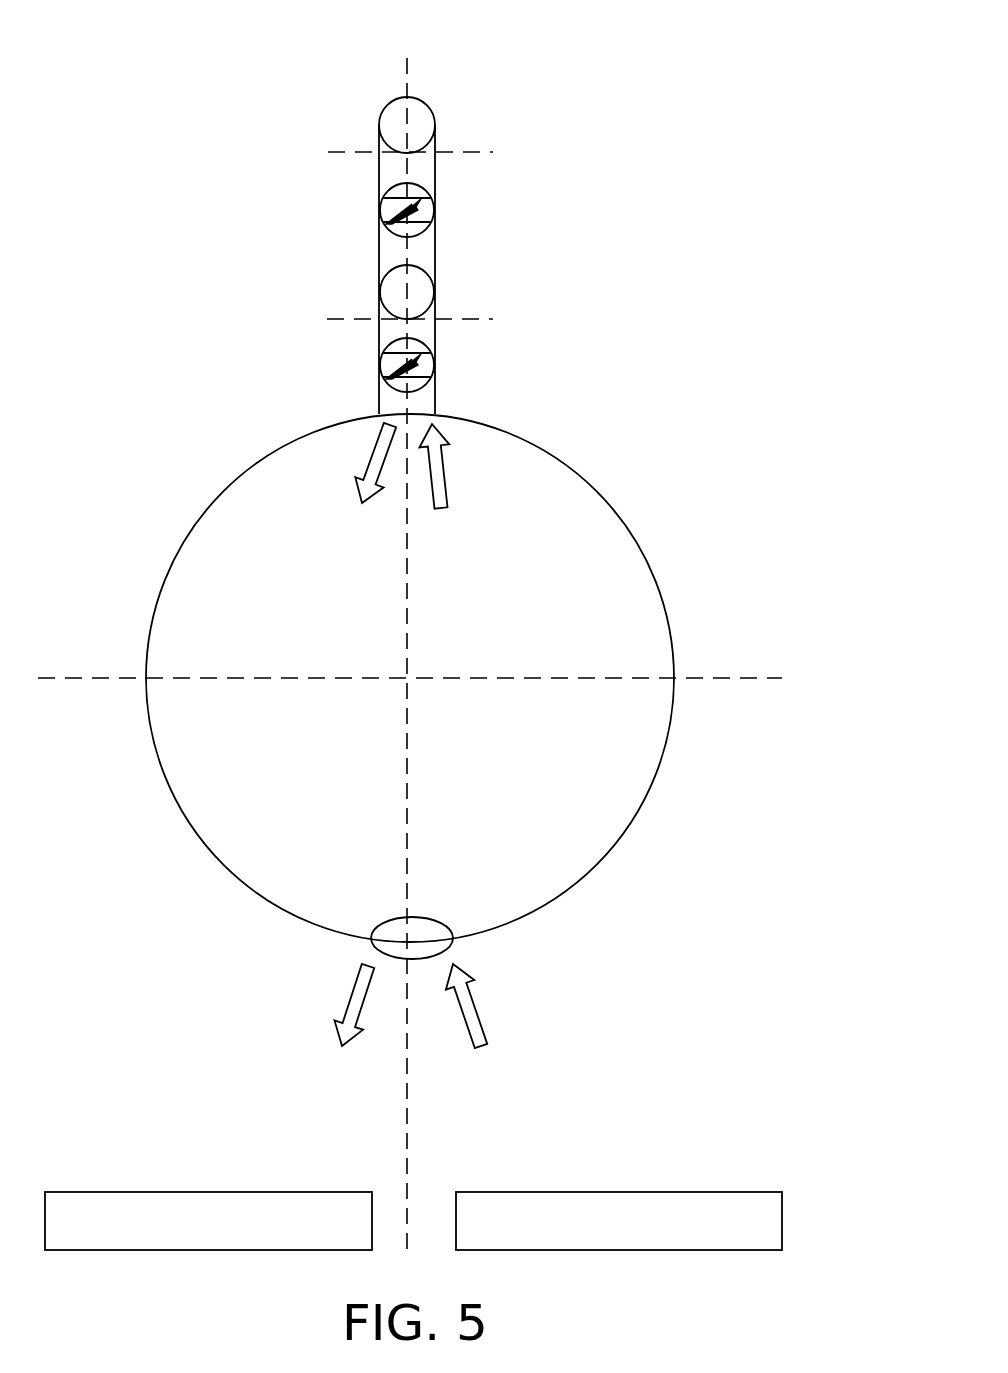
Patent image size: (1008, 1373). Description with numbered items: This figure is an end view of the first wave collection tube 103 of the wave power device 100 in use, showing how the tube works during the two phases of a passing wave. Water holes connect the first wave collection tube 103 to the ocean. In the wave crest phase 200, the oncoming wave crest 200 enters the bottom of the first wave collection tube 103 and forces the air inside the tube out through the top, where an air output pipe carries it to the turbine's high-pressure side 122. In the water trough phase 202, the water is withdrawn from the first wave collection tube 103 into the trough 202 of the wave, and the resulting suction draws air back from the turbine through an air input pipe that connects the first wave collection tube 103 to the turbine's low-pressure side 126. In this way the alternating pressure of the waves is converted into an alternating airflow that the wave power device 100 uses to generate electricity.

The wave power device 100 is at (545, 75).
The turbine's high-pressure side 122 is at (418, 100).
The turbine's low-pressure side 126 is at (380, 282).
The first wave collection tube 103 is at (612, 507).
The wave crest phase 200 is at (642, 1232).
The water trough phase 202 is at (232, 1232).